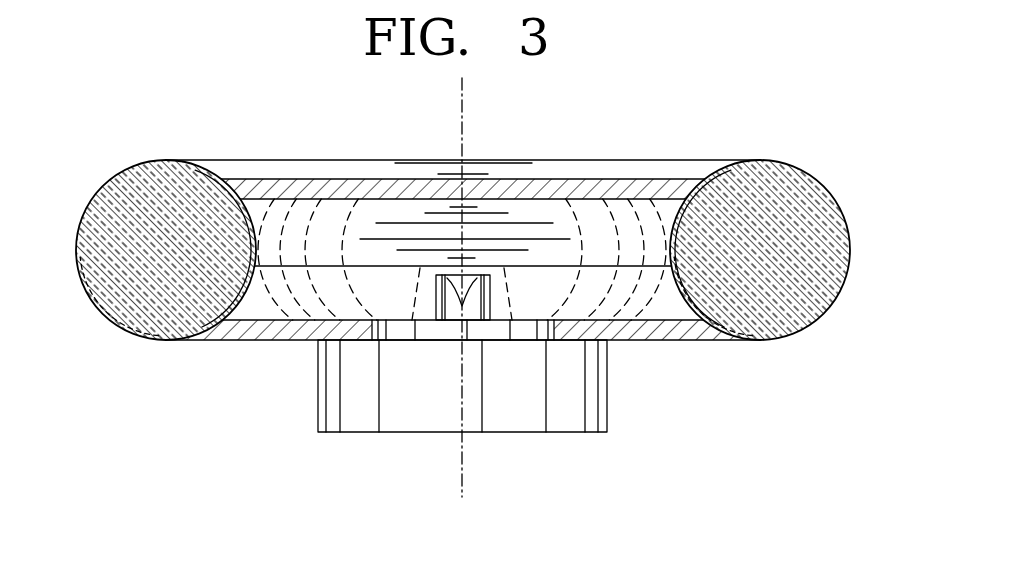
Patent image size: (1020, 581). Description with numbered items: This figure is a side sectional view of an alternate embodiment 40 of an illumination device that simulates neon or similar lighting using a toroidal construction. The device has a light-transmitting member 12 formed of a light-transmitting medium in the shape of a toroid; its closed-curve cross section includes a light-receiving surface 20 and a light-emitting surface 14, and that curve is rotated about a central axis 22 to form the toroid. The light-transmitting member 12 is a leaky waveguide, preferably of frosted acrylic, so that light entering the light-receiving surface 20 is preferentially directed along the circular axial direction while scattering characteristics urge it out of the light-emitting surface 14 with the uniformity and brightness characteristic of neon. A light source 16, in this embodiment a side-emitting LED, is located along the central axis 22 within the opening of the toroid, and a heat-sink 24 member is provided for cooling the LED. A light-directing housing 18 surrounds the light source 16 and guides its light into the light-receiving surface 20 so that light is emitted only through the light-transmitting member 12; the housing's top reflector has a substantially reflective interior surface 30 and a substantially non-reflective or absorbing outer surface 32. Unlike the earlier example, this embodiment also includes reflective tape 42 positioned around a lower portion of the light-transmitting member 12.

The alternate embodiment of an illumination device 40 is at (86, 84).
The interior surface 30 is at (307, 197).
The outer surface 32 is at (330, 178).
The light-directing housing 18 is at (662, 180).
The light-receiving surface 20 is at (662, 247).
The heat-sink 24 is at (333, 407).
The light source 16 is at (460, 308).
The light-emitting surface 14 is at (848, 190).
The light-transmitting member 12 is at (784, 165).
The reflective tape 42 is at (828, 314).
The central axis 22 is at (468, 490).